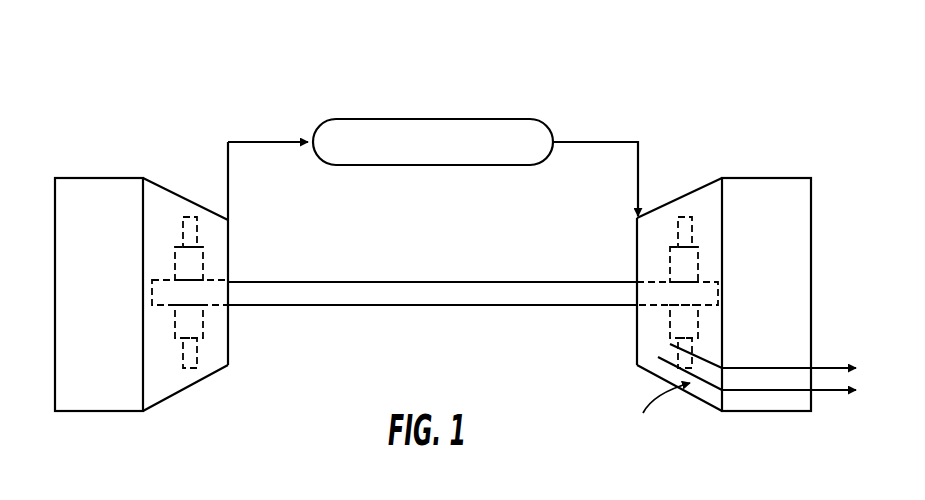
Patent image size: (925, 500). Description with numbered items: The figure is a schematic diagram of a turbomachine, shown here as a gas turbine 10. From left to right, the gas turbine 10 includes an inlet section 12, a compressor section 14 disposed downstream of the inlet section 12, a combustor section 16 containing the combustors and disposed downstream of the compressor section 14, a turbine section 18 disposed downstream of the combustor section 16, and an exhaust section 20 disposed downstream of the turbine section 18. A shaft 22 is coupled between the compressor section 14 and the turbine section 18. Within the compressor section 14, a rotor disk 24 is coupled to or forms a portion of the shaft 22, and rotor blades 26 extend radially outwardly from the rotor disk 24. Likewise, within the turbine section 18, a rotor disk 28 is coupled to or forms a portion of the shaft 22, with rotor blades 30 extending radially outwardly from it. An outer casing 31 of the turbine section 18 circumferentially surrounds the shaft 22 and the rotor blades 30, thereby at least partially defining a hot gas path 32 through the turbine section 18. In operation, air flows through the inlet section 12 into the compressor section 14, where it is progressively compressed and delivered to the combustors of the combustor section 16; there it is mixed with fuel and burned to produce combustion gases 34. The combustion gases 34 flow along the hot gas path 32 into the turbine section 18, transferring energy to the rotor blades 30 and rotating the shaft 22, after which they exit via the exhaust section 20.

The gas turbine 10 is at (288, 81).
The inlet section 12 is at (75, 178).
The compressor section 14 is at (173, 190).
The combustor section 16 is at (490, 119).
The turbine section 18 is at (707, 180).
The exhaust section 20 is at (783, 178).
The shaft 22 is at (388, 306).
The rotor disk 24 is at (175, 272).
The rotor blade 26 is at (182, 233).
The rotor disk 28 is at (670, 265).
The rotor blade 30 is at (678, 223).
The outer casing 31 is at (700, 405).
The hot gas path 32 is at (653, 416).
The combustion gases 34 is at (613, 142).